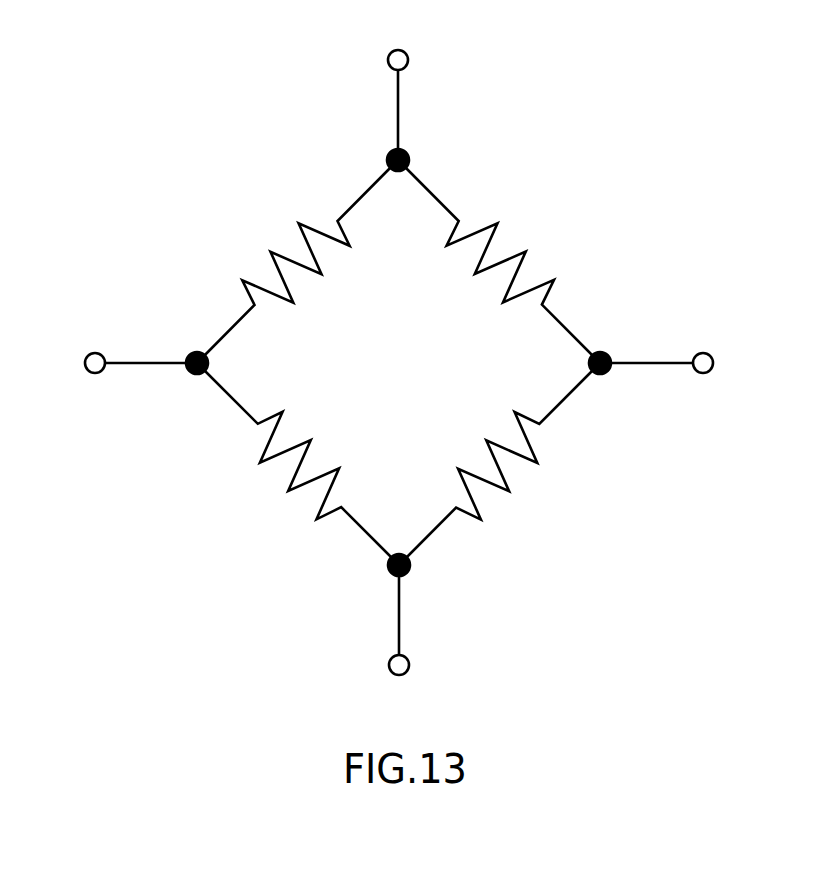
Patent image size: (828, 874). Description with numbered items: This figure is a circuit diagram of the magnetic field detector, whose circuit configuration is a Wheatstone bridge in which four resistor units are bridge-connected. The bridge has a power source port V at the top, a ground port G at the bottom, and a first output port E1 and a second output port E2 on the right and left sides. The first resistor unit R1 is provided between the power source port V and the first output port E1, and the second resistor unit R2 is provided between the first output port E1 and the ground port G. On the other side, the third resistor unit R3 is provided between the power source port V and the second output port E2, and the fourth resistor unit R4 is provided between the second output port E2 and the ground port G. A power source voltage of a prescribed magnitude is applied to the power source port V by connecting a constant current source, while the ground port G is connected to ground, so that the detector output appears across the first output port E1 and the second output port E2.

The power source port V is at (398, 89).
The ground port G is at (399, 637).
The first output port E1 is at (674, 364).
The second output port E2 is at (124, 364).
The first resistor unit R1 is at (499, 261).
The second resistor unit R2 is at (499, 464).
The third resistor unit R3 is at (297, 261).
The fourth resistor unit R4 is at (298, 464).